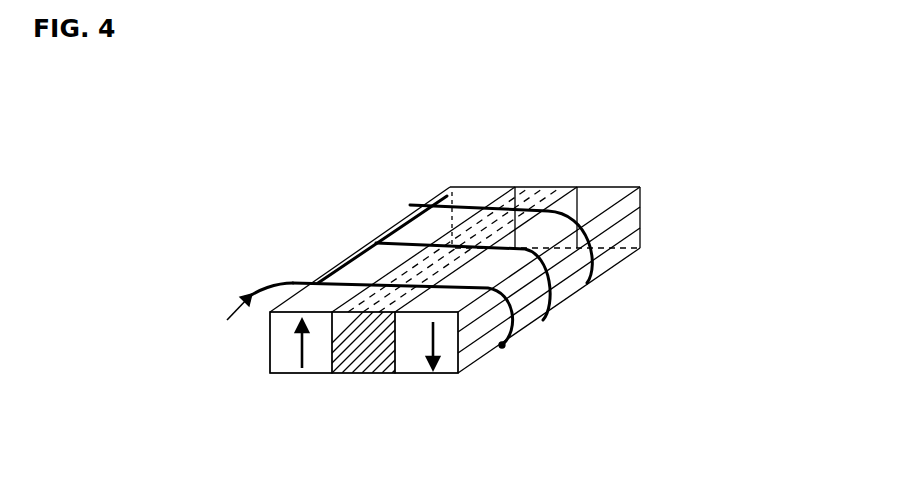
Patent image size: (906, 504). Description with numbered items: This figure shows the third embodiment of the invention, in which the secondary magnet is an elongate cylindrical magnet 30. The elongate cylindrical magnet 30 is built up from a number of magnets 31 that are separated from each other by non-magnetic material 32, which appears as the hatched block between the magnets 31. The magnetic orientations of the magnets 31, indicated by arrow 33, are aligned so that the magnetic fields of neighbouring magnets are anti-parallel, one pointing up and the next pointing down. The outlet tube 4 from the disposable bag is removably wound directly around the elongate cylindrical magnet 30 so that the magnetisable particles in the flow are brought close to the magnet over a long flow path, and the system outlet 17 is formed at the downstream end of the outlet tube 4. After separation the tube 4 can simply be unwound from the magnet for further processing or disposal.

The outlet tube 4 is at (273, 290).
The system outlet 17 is at (444, 197).
The elongate cylindrical magnet 30 is at (522, 246).
The magnets 31 is at (297, 376).
The non-magnetic material 32 is at (363, 376).
The arrow 33 is at (322, 338).